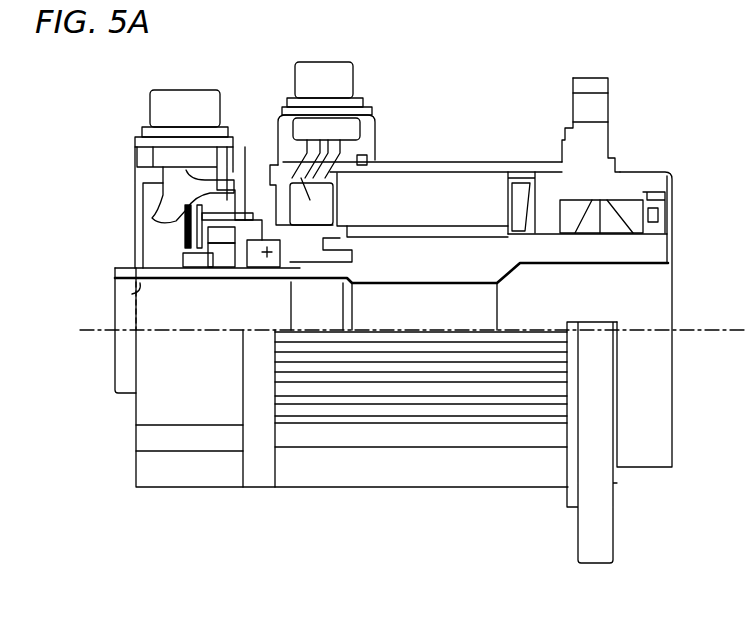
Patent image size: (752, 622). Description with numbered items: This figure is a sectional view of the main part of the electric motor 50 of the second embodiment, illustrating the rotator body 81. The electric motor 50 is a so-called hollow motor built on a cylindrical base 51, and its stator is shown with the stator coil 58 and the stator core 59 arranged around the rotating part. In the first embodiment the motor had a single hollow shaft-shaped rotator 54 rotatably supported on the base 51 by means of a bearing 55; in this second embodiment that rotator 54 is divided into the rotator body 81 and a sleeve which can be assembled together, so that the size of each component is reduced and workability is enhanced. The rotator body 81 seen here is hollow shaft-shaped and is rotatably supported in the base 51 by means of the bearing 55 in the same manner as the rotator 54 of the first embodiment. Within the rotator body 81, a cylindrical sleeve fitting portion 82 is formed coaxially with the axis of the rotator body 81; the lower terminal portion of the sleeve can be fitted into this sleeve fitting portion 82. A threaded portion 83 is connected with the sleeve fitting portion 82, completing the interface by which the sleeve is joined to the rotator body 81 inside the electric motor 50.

The electric motor 50 is at (490, 160).
The cylindrical base 51 is at (462, 178).
The rotator 54 is at (108, 262).
The bearing 55 is at (268, 247).
The stator coil 58 is at (283, 238).
The stator core 59 is at (426, 186).
The rotator body 81 is at (398, 238).
The sleeve fitting portion 82 is at (140, 289).
The threaded portion 83 is at (292, 285).